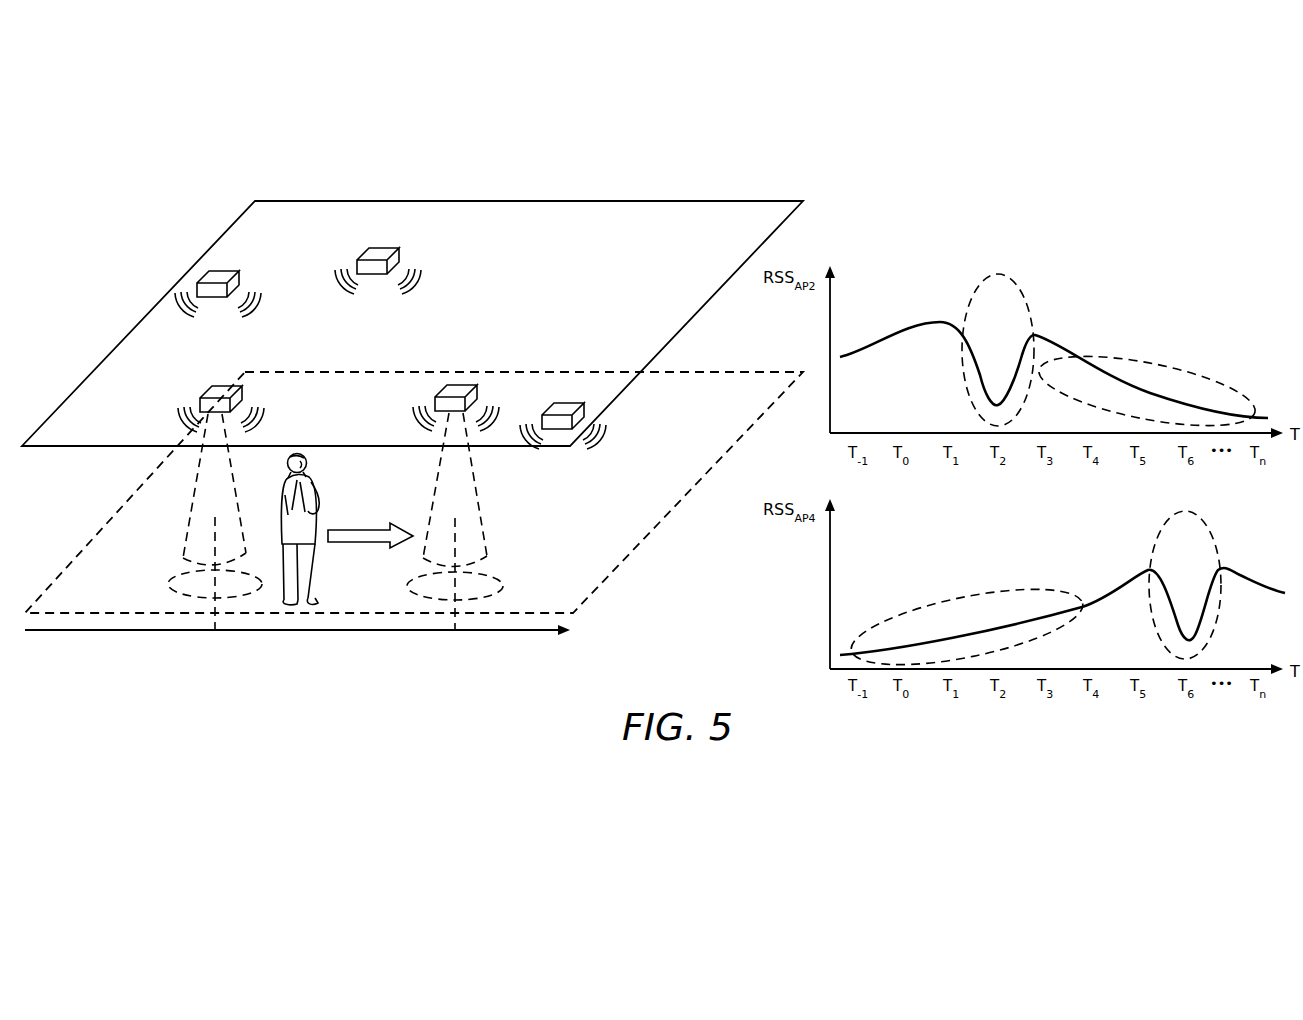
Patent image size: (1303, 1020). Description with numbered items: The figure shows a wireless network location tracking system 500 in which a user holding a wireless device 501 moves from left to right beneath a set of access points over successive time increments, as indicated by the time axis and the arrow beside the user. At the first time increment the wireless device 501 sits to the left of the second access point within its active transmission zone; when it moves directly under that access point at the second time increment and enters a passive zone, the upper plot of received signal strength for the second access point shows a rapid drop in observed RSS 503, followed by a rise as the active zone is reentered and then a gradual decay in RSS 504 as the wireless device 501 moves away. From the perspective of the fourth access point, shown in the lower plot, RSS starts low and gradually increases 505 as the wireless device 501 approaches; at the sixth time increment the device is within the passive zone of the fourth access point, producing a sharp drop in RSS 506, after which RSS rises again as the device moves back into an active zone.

The wireless network location tracking system 500 is at (190, 127).
The wireless device 501 is at (322, 512).
The rapid drop in observed RSS 503 is at (1010, 278).
The gradual decay in RSS 504 is at (1180, 366).
The gradual increase in RSS 505 is at (928, 600).
The sharp drop in RSS 506 is at (1180, 513).